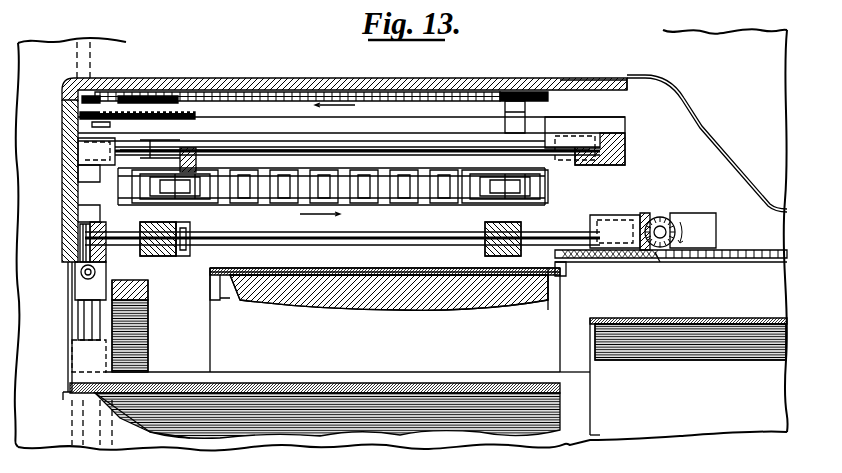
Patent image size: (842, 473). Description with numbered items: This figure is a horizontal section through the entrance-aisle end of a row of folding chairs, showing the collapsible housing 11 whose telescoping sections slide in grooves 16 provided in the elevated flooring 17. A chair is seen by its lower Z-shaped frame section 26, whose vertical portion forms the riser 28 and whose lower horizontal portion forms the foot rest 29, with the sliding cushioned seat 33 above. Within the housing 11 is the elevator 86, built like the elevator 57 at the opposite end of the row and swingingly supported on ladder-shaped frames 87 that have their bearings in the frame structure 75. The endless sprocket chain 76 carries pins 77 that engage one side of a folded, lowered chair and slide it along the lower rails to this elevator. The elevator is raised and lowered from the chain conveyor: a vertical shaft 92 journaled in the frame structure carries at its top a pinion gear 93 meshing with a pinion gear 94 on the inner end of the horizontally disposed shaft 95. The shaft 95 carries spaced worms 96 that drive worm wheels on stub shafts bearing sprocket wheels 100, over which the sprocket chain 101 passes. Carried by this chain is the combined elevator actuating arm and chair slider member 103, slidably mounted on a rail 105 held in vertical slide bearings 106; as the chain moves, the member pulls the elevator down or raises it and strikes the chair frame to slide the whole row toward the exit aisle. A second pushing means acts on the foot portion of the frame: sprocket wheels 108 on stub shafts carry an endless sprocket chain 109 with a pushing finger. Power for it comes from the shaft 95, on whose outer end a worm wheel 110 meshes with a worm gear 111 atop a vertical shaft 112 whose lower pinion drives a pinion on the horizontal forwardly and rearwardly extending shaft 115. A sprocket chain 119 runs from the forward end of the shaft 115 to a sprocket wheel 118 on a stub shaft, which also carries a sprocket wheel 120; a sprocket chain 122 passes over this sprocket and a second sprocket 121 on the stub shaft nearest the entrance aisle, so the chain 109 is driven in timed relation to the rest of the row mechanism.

The collapsible housing 11 is at (228, 398).
The grooves 16 is at (70, 396).
The elevated flooring 17 is at (314, 422).
The Z-shape frame section 26 is at (210, 318).
The riser 28 is at (418, 268).
The foot rest 29 is at (403, 391).
The sliding cushioned seat 33 is at (360, 282).
The elevator 57 is at (188, 256).
The frame structure 75 is at (292, 78).
The endless sprocket chain 76 is at (752, 258).
The pins 77 is at (566, 270).
The elevator 86 is at (148, 290).
The ladder shaped frames 87 is at (148, 330).
The vertical shaft 92 is at (657, 250).
The pinion gear 93 is at (672, 220).
The pinion gear 94 is at (645, 213).
The horizontally disposed shaft 95 is at (288, 240).
The worms 96 is at (176, 228).
The sprocket wheels 100 is at (152, 187).
The sprocket chain 101 is at (165, 78).
The combined elevator actuating arm and chair slider member 103 is at (188, 148).
The rail 105 is at (380, 146).
The vertical slide bearings 106 is at (615, 157).
The sprocket wheels 108 is at (548, 97).
The endless sprocket chain 109 is at (335, 92).
The worm wheel 110 is at (88, 222).
The worm gear 111 is at (80, 280).
The vertical shaft 112 is at (96, 272).
The horizontal forwardly and rearwardly extending shaft 115 is at (90, 325).
The sprocket wheel 118 is at (112, 98).
The sprocket chain 119 is at (92, 96).
The sprocket wheel 120 is at (95, 130).
The second sprocket 121 is at (195, 116).
The sprocket chain 122 is at (78, 141).